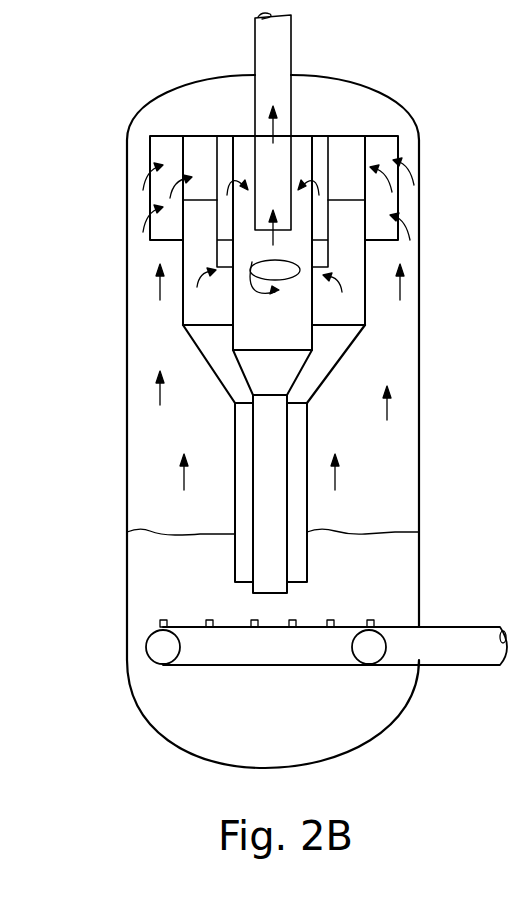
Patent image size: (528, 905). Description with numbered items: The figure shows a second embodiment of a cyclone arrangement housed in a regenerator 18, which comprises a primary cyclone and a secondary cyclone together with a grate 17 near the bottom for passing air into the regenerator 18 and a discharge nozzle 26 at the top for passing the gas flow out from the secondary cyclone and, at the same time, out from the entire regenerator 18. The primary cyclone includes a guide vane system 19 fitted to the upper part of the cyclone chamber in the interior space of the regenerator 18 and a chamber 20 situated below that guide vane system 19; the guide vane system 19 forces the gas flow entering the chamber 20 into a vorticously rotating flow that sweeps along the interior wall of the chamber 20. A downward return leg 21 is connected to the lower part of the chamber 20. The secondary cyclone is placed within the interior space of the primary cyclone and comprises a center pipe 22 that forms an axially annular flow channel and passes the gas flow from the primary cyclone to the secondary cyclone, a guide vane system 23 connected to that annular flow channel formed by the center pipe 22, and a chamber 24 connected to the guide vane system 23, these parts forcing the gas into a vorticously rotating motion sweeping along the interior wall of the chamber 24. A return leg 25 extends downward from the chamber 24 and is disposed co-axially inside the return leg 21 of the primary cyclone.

The grate 17 is at (208, 640).
The regenerator 18 is at (125, 260).
The guide vane system 19 is at (378, 150).
The chamber 20 is at (367, 258).
The return leg 21 is at (308, 432).
The center pipe 22 is at (320, 253).
The guide vane system 23 is at (317, 220).
The chamber 24 is at (311, 340).
The return leg 25 is at (282, 477).
The discharge nozzle 26 is at (255, 62).